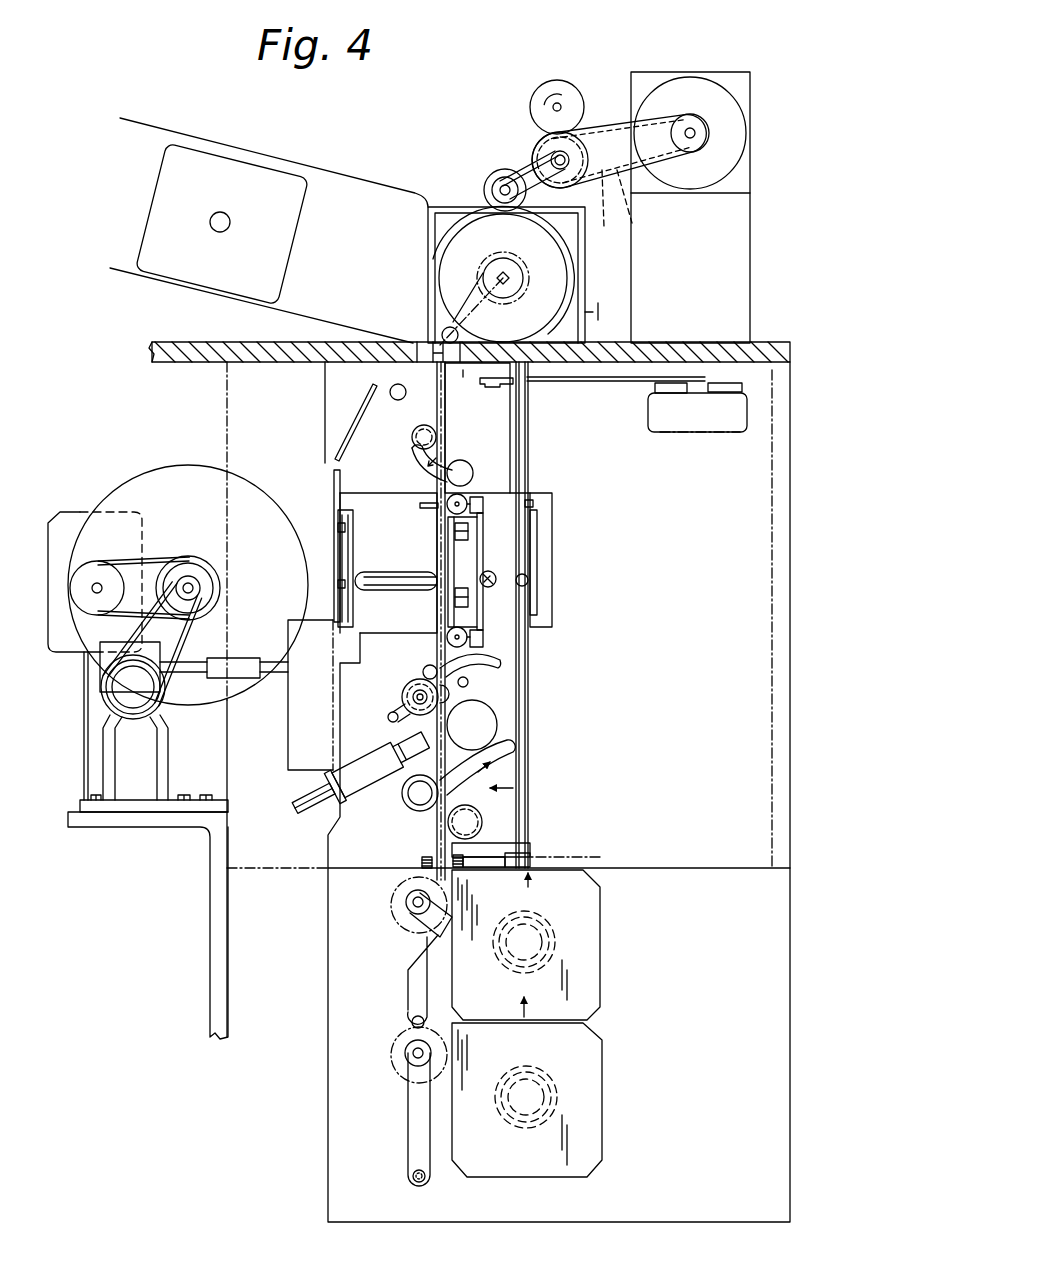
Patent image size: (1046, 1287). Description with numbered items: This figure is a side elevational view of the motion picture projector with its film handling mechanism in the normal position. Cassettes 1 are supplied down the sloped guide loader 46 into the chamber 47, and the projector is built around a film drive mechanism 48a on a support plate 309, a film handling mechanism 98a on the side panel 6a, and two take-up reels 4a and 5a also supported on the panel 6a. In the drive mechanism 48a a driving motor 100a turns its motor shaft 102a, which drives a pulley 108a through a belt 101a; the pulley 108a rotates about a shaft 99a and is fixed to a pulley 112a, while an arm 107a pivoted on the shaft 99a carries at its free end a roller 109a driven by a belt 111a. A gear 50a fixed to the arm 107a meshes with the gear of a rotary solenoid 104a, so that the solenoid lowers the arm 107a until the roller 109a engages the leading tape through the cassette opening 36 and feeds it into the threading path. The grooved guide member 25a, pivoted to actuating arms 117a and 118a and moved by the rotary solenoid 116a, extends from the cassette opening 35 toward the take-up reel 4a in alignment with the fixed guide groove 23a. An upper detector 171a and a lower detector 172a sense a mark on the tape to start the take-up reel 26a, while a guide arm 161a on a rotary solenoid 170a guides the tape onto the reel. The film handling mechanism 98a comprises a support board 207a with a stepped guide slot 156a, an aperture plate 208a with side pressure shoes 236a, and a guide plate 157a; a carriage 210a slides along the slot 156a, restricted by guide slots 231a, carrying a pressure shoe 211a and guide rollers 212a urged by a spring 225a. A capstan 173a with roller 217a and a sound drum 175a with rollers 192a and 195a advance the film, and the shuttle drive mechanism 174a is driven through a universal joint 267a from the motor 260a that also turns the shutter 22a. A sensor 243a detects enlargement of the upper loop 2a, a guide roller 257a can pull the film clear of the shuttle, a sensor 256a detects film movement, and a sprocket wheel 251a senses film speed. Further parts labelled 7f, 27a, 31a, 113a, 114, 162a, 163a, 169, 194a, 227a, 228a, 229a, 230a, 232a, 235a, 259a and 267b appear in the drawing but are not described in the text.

The cassette 1 is at (170, 270).
The upper loop 2a is at (470, 285).
The take-up reel 4a is at (600, 900).
The take-up reel 5a is at (602, 1070).
The side panel 6a is at (792, 700).
The path 7f is at (588, 1022).
The shutter 22a is at (158, 478).
The fixed guide groove 23a is at (447, 427).
The grooved guide member 25a is at (530, 426).
The take-up reel 26a is at (552, 927).
The hub 27a is at (552, 1098).
The roller 31a is at (492, 491).
The cassette opening 35 is at (442, 335).
The cassette opening 36 is at (522, 218).
The sloped guide loader 46 is at (328, 326).
The chamber 47 is at (583, 262).
The film drive mechanism 48a is at (688, 70).
The gear 50a is at (625, 207).
The film handling mechanism 98a is at (773, 448).
The pivot shaft 99a is at (581, 148).
The driving motor 100a is at (735, 98).
The belt 101a is at (598, 118).
The motor shaft 102a is at (710, 133).
The rotary solenoid 104a is at (548, 80).
The arm 107a is at (536, 152).
The pulley 108a is at (620, 182).
The roller 109a is at (485, 183).
The belt 111a is at (522, 166).
The pulley 112a is at (603, 215).
The pin 113a is at (515, 181).
The shaft 114 is at (440, 882).
The rotary solenoid 116a is at (713, 432).
The actuating arm 117a is at (617, 381).
The actuating arm 118a is at (507, 843).
The horizontal stepped guide slot 156a is at (370, 574).
The guide plate 157a is at (350, 433).
The guide arm 161a is at (408, 968).
The crank 162a is at (406, 904).
The crank 163a is at (402, 918).
The pin 169 is at (412, 1022).
The rotary solenoid 170a is at (397, 942).
The upper detector 171a is at (399, 400).
The lower detector 172a is at (422, 860).
The capstan 173a is at (412, 437).
The intermittent film drive mechanism 174a is at (288, 760).
The sound drum 175a is at (497, 723).
The roller 192a is at (406, 803).
The arm 194a is at (498, 770).
The roller 195a is at (403, 696).
The support board 207a is at (422, 500).
The aperture plate 208a is at (334, 480).
The carriage 210a is at (545, 592).
The pressure shoe 211a is at (458, 553).
The guide roller 212a is at (452, 506).
The roller 217a is at (465, 470).
The spring 225a is at (500, 497).
The arm 227a is at (532, 540).
The arm 228a is at (505, 660).
The pivot 229a is at (537, 490).
The arm 230a is at (410, 456).
The guide slot 231a is at (538, 510).
The solenoid 232a is at (398, 742).
The bolt 235a is at (338, 515).
The side pressure shoe 236a is at (338, 583).
The sensor 243a is at (390, 388).
The sprocket wheel 251a is at (484, 810).
The sensor 256a is at (470, 683).
The guide roller 257a is at (426, 668).
The plunger 259a is at (317, 815).
The motor 260a is at (72, 512).
The universal joint 267a is at (243, 658).
The bracket 267b is at (108, 706).
The support plate 309 is at (781, 342).